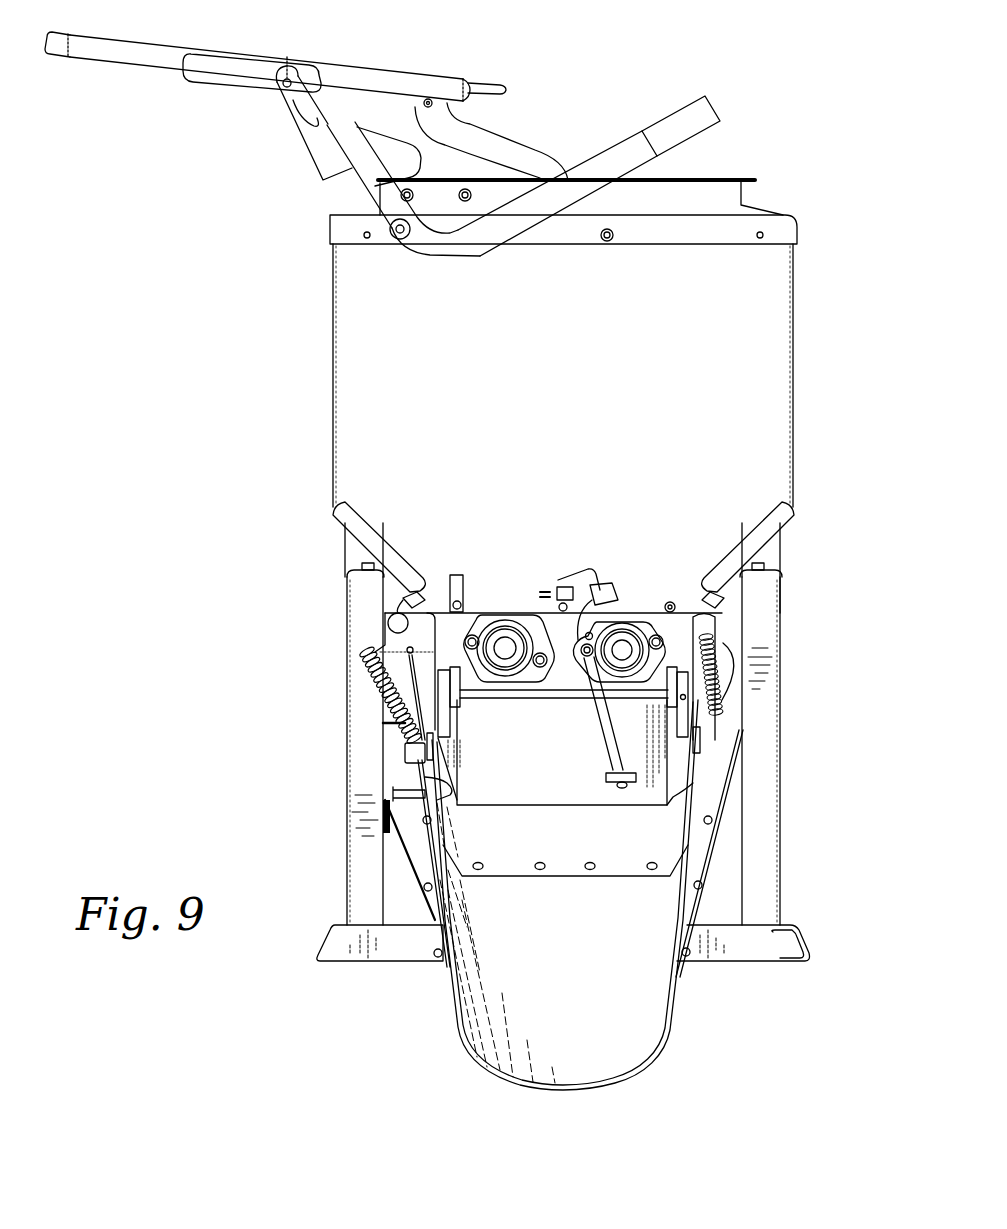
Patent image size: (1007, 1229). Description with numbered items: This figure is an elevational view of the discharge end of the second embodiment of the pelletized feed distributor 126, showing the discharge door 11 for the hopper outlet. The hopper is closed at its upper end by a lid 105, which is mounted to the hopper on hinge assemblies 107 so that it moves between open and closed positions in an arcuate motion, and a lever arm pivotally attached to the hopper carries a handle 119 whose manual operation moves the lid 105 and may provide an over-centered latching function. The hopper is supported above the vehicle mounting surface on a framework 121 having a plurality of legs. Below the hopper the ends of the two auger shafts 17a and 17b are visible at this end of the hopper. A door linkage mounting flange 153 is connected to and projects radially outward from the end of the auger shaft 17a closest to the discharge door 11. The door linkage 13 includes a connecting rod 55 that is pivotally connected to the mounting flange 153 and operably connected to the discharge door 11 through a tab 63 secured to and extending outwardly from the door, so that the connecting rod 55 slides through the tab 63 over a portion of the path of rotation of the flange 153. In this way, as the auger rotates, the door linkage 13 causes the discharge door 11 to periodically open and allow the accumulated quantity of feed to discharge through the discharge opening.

The lid 105 is at (124, 62).
The hinge assembly 107 is at (272, 182).
The handle 119 is at (714, 110).
The feed distributor 126 is at (258, 533).
The auger shaft 17b is at (505, 645).
The auger shaft 17a is at (630, 640).
The door linkage mounting flange 153 is at (603, 628).
The connecting rod 55 is at (606, 741).
The tab 63 is at (612, 780).
The door linkage 13 is at (645, 750).
The discharge door 11 is at (477, 767).
The framework 121 is at (768, 693).